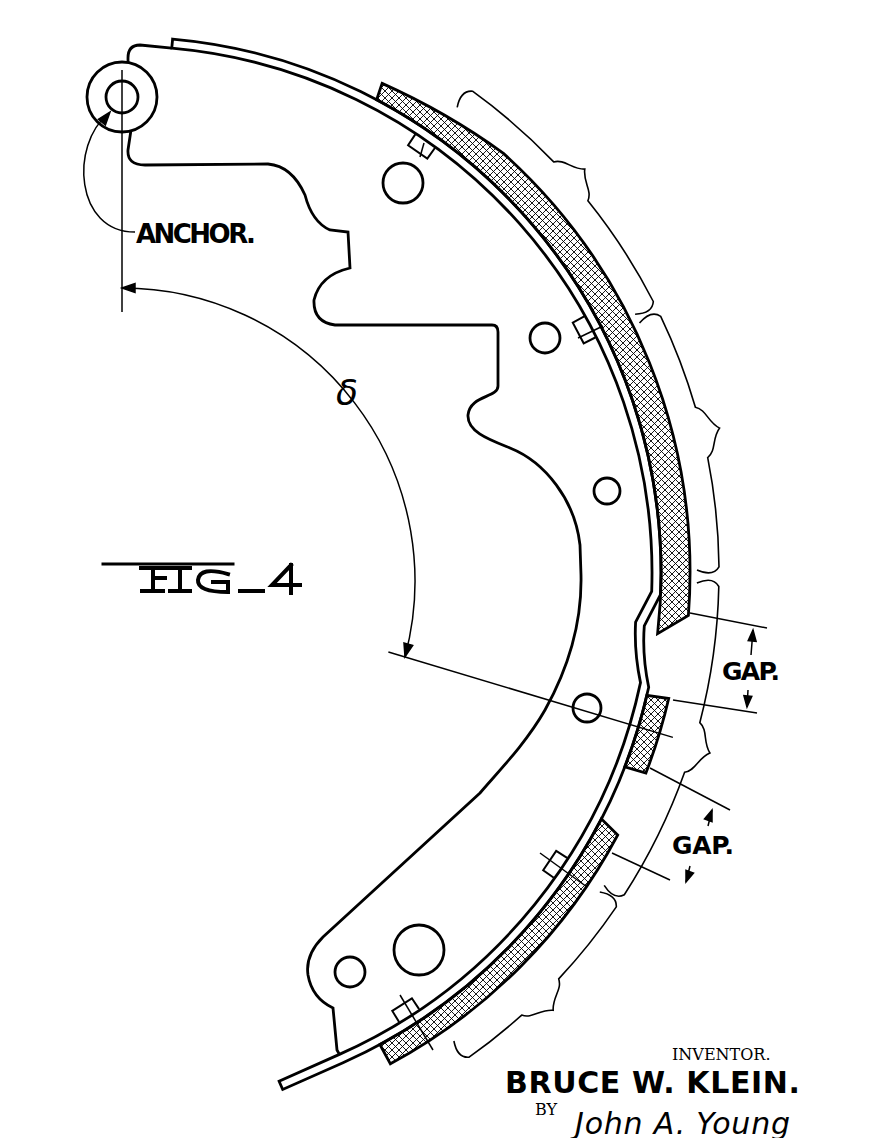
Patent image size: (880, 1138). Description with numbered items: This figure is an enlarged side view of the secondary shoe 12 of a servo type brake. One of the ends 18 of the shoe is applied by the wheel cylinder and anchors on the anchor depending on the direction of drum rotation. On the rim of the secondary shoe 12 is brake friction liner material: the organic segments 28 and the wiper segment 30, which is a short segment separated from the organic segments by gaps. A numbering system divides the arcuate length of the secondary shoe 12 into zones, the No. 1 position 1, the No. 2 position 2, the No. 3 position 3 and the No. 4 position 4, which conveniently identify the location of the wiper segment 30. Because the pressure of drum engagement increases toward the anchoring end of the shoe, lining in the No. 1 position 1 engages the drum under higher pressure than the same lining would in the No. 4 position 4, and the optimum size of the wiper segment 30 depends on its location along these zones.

The secondary shoe 12 is at (590, 563).
The ends of the shoes 18 is at (253, 82).
The organic liner segments 28 is at (597, 267).
The wiper segment 30 is at (655, 750).
The No. 1 position 1 is at (555, 202).
The No. 2 position 2 is at (694, 443).
The No. 3 position 3 is at (671, 738).
The No. 4 position 4 is at (535, 974).